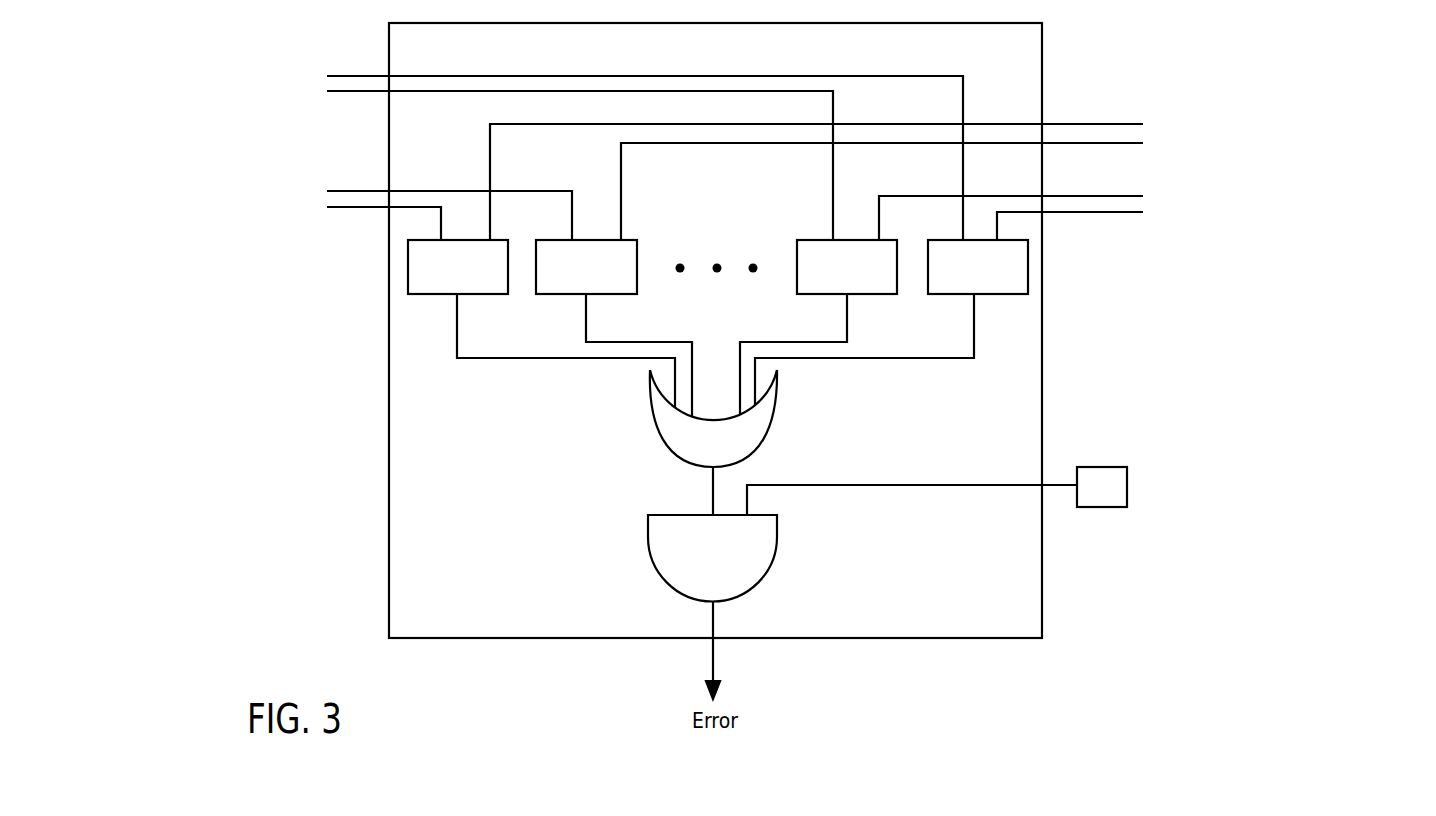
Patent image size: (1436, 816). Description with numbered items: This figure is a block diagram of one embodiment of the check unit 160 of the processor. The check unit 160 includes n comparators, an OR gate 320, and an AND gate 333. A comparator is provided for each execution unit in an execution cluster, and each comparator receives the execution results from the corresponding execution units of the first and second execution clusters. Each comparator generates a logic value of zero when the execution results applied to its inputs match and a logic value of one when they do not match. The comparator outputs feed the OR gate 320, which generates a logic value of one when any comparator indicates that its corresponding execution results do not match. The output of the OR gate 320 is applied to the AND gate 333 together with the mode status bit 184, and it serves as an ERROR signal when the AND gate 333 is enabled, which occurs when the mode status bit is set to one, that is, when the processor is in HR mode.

The check unit 160 is at (1004, 624).
The mode status bit 184 is at (1120, 499).
The OR gate 320 is at (733, 452).
The AND gate 333 is at (733, 571).